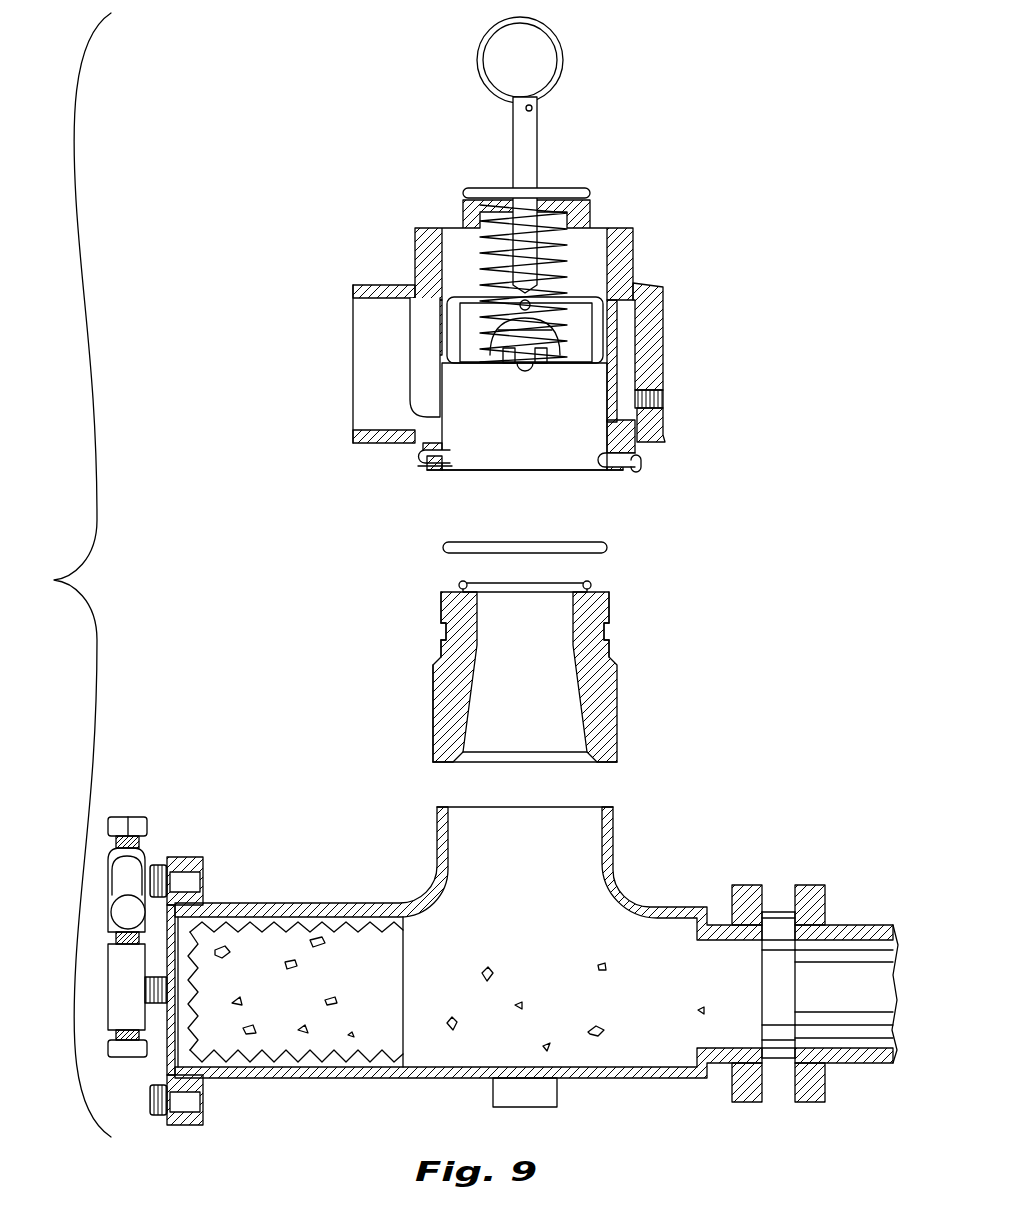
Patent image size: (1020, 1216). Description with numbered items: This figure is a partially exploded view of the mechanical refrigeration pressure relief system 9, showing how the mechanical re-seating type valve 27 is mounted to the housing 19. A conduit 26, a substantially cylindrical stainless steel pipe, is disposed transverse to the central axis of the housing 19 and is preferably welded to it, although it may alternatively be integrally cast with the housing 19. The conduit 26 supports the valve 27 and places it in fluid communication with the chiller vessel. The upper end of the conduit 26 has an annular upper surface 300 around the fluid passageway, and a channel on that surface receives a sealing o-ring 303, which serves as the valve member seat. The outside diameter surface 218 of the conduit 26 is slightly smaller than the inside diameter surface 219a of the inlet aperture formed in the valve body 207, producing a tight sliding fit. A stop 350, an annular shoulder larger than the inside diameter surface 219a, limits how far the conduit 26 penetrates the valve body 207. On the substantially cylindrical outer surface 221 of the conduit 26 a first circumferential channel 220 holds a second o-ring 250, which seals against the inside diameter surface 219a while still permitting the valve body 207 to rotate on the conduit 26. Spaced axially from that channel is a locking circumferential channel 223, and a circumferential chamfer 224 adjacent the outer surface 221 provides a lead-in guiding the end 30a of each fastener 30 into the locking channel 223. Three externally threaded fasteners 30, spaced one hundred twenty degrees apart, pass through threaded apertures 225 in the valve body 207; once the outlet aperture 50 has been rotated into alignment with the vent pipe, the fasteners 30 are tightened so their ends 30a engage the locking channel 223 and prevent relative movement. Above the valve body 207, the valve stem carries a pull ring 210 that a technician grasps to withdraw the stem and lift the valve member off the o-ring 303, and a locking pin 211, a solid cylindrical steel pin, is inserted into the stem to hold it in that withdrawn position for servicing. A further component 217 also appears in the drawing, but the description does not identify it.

The mechanical refrigeration pressure relief system 9 is at (70, 575).
The pull ring 210 is at (566, 44).
The locking pin 211 is at (592, 194).
The mechanical re-seating type valve 27 is at (658, 218).
The outlet aperture 50 is at (350, 378).
The valve body 207 is at (663, 330).
The end of fastener 30a is at (643, 440).
The externally threaded fasteners 30 is at (418, 456).
The threaded apertures 225 is at (427, 470).
The inside diameter surface 219a is at (443, 472).
The cylinder 217 is at (556, 455).
The sealing o-ring 303 is at (606, 540).
The annular upper surface 300 is at (600, 590).
The substantially cylindrical outer surface 221 is at (441, 604).
The first circumferential channel 220 is at (441, 636).
The locking circumferential channel 223 is at (436, 665).
The stop 350 is at (432, 690).
The outside diameter surface 218 is at (609, 600).
The second o-ring 250 is at (609, 632).
The circumferential chamfer 224 is at (609, 655).
The conduit 26 is at (640, 700).
The housing 19 is at (645, 900).